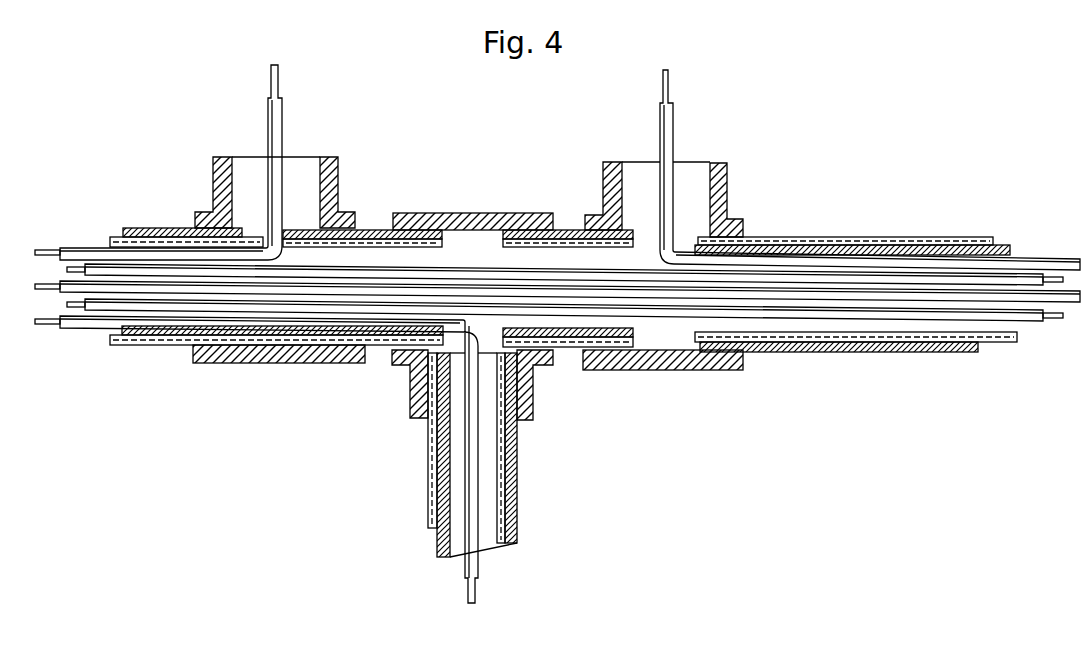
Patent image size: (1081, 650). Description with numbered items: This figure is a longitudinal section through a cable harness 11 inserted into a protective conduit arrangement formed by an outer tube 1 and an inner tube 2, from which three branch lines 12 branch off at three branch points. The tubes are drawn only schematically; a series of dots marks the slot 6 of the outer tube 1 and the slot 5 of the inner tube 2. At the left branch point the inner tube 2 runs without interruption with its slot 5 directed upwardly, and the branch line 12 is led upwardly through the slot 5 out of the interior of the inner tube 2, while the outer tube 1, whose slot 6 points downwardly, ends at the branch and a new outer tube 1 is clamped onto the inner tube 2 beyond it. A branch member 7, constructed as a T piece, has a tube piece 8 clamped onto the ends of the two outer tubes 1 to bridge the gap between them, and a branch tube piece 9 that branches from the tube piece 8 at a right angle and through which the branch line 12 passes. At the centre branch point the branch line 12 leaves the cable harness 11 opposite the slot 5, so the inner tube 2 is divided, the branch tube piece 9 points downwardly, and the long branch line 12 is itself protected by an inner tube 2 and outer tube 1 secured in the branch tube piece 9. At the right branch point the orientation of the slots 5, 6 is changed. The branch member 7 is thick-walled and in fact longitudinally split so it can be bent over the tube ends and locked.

The outer tube 1 is at (155, 226).
The inner tube 2 is at (160, 345).
The slot of the inner tube 5 is at (120, 238).
The slot of the outer tube 6 is at (842, 237).
The branch member 7 is at (322, 156).
The tube piece 8 is at (440, 220).
The branch tube piece 9 is at (216, 168).
The cable harness 11 is at (1040, 250).
The branch line 12 is at (268, 118).